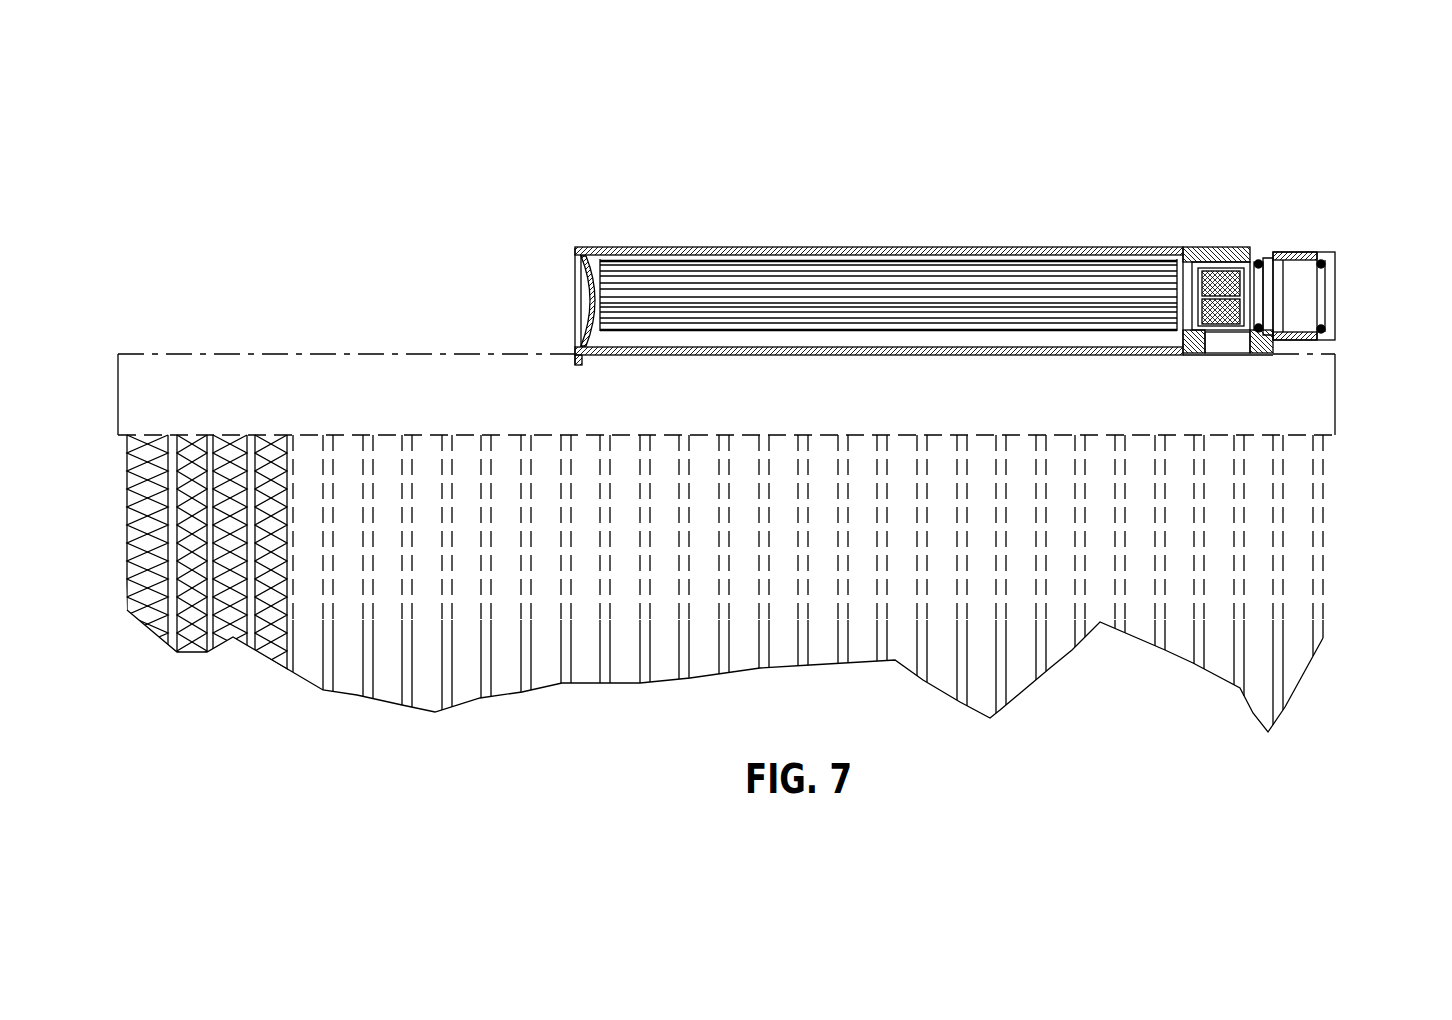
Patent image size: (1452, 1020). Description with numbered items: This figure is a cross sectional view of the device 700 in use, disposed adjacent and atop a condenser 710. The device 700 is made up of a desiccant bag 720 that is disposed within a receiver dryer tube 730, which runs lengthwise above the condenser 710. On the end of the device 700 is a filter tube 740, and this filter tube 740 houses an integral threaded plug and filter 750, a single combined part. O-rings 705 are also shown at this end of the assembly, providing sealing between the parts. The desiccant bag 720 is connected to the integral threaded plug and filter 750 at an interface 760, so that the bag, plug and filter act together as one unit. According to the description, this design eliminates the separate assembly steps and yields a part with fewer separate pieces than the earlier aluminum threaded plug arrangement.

The device 700 is at (1360, 137).
The O-rings 705 is at (1260, 250).
The condenser 710 is at (357, 372).
The desiccant bag 720 is at (1028, 259).
The receiver dryer tube 730 is at (697, 247).
The filter tube 740 is at (1228, 247).
The integral threaded plug and filter 750 is at (1337, 270).
The interface 760 is at (1205, 330).